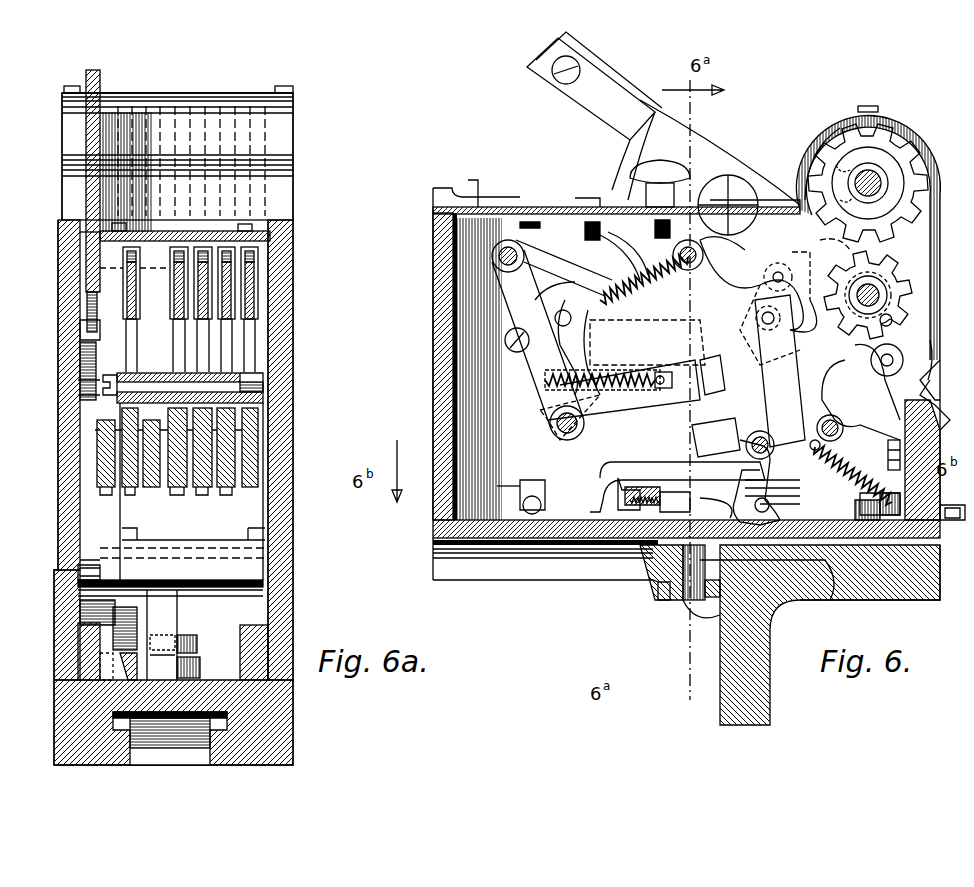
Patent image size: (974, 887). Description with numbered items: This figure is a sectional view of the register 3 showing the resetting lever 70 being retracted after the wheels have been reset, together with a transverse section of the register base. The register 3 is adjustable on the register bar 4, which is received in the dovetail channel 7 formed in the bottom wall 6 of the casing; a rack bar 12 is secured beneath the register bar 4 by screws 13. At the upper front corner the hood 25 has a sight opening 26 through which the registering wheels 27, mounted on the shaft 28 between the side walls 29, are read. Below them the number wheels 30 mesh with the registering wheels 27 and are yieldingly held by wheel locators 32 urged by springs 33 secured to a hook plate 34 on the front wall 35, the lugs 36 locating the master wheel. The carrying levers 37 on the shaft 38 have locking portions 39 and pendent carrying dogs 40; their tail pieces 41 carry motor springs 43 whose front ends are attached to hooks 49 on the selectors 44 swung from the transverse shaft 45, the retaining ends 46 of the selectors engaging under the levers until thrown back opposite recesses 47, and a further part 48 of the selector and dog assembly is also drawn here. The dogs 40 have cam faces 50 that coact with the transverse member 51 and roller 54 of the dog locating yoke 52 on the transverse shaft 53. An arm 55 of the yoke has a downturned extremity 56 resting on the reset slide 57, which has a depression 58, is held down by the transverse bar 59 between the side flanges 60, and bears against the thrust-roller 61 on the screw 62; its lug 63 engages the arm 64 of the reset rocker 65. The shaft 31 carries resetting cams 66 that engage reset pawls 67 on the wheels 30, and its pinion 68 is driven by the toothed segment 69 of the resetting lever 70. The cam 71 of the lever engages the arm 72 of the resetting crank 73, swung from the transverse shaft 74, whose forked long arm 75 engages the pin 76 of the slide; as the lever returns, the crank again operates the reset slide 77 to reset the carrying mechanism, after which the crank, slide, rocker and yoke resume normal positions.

In FIG. 6, the register 3 is at (445, 352).
In FIG. 6, the register bar 4 is at (775, 598).
In FIG. 6A, the bottom wall 6 is at (293, 712).
In FIG. 6, the bottom wall 6 is at (902, 575).
In FIG. 6A, the dovetail channel 7 is at (172, 752).
In FIG. 6, the dovetail channel 7 is at (842, 562).
In FIG. 6, the rack bar 12 is at (672, 570).
In FIG. 6, the screws 13 is at (702, 618).
In FIG. 6A, the hood 25 is at (166, 97).
In FIG. 6, the hood 25 is at (888, 122).
In FIG. 6, the sight opening 26 is at (918, 162).
In FIG. 6, the registering wheels 27 is at (900, 156).
In FIG. 6, the shaft 28 is at (882, 183).
In FIG. 6A, the side walls 29 is at (68, 326).
In FIG. 6, the side walls 29 is at (826, 130).
In FIG. 6, the number wheels 30 is at (892, 284).
In FIG. 6, the shaft 31 is at (882, 296).
In FIG. 6, the wheel locators 32 is at (870, 390).
In FIG. 6, the springs 33 is at (870, 486).
In FIG. 6, the hook plate 34 is at (906, 452).
In FIG. 6, the front wall 35 is at (912, 426).
In FIG. 6, the lugs 36 is at (930, 380).
In FIG. 6A, the carrying levers 37 is at (258, 298).
In FIG. 6, the carrying levers 37 is at (591, 423).
In FIG. 6, the shaft 38 is at (568, 428).
In FIG. 6, the locking portions 39 is at (807, 264).
In FIG. 6A, the carrying dogs 40 is at (256, 275).
In FIG. 6, the carrying dogs 40 is at (745, 272).
In FIG. 6, the tail pieces 41 is at (580, 370).
In FIG. 6, the motor springs 43 is at (575, 318).
In FIG. 6, the selectors 44 is at (647, 338).
In FIG. 6, the transverse shaft 45 is at (651, 272).
In FIG. 6, the retaining ends 46 is at (692, 400).
In FIG. 6, the recesses 47 is at (704, 386).
In FIG. 6, the cam 48 is at (770, 300).
In FIG. 6, the hooks 49 is at (640, 268).
In FIG. 6, the cam faces 50 is at (775, 355).
In FIG. 6A, the transverse member 51 is at (245, 390).
In FIG. 6, the transverse member 51 is at (756, 320).
In FIG. 6A, the dog locating yoke 52 is at (262, 522).
In FIG. 6, the dog locating yoke 52 is at (790, 440).
In FIG. 6A, the transverse shaft 53 is at (80, 558).
In FIG. 6, the transverse shaft 53 is at (790, 476).
In FIG. 6A, the roller 54 is at (218, 376).
In FIG. 6A, the arm 55 is at (80, 608).
In FIG. 6, the arm 55 is at (690, 468).
In FIG. 6A, the downturned extremity 56 is at (118, 628).
In FIG. 6, the downturned extremity 56 is at (608, 492).
In FIG. 6A, the reset slide 57 is at (128, 663).
In FIG. 6, the reset slide 57 is at (566, 512).
In FIG. 6A, the depression 58 is at (130, 672).
In FIG. 6, the depression 58 is at (642, 514).
In FIG. 6, the transverse bar 59 is at (598, 515).
In FIG. 6A, the side flanges 60 is at (85, 648).
In FIG. 6, the side flanges 60 is at (674, 522).
In FIG. 6A, the thrust-roller 61 is at (200, 665).
In FIG. 6, the thrust-roller 61 is at (895, 520).
In FIG. 6A, the screw 62 is at (197, 642).
In FIG. 6, the screw 62 is at (902, 522).
In FIG. 6A, the lug 63 is at (183, 626).
In FIG. 6, the lug 63 is at (790, 512).
In FIG. 6A, the arm 64 is at (160, 612).
In FIG. 6, the arm 64 is at (748, 482).
In FIG. 6A, the reset rocker 65 is at (186, 540).
In FIG. 6, the reset rocker 65 is at (716, 437).
In FIG. 6, the resetting cams 66 is at (888, 299).
In FIG. 6, the reset pawls 67 is at (905, 326).
In FIG. 6A, the pinion 68 is at (80, 392).
In FIG. 6, the pinion 68 is at (922, 236).
In FIG. 6A, the toothed segment 69 is at (62, 352).
In FIG. 6, the toothed segment 69 is at (766, 188).
In FIG. 6A, the resetting lever 70 is at (86, 206).
In FIG. 6, the resetting lever 70 is at (606, 72).
In FIG. 6, the cam 71 is at (630, 186).
In FIG. 6, the arm 72 is at (596, 285).
In FIG. 6, the resetting crank 73 is at (500, 300).
In FIG. 6, the transverse shaft 74 is at (492, 258).
In FIG. 6, the long arm 75 is at (520, 408).
In FIG. 6, the pin 76 is at (538, 482).
In FIG. 6, the reset slide 77 is at (650, 372).